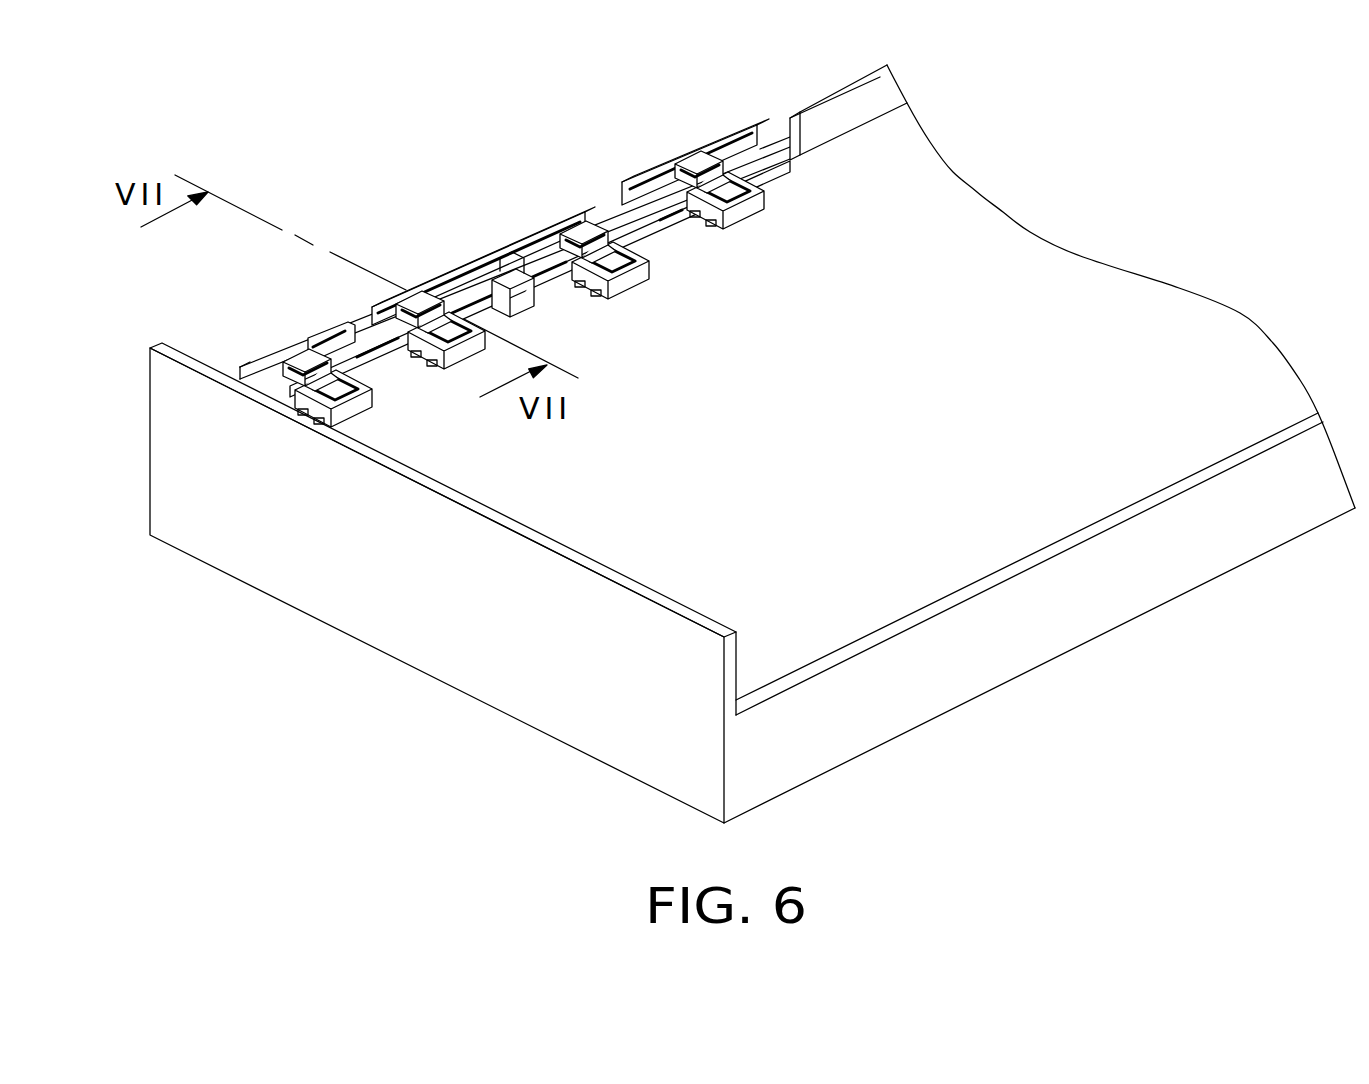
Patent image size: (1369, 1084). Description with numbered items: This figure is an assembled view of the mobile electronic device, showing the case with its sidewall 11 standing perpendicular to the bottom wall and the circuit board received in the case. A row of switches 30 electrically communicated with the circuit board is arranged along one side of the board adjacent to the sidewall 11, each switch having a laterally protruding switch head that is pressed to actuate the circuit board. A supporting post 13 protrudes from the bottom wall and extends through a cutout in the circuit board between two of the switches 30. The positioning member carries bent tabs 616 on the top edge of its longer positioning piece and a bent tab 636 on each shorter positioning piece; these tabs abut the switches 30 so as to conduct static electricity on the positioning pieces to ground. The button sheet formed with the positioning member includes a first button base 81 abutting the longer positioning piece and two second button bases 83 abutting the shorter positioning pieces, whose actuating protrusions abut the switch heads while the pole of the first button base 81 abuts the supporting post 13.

The sidewall 11 is at (827, 122).
The supporting post 13 is at (530, 275).
The switch 30 is at (617, 235).
The first button base 81 is at (457, 265).
The second button base 83 is at (255, 368).
The bent tab 616 is at (422, 297).
The bent tab 636 is at (303, 362).